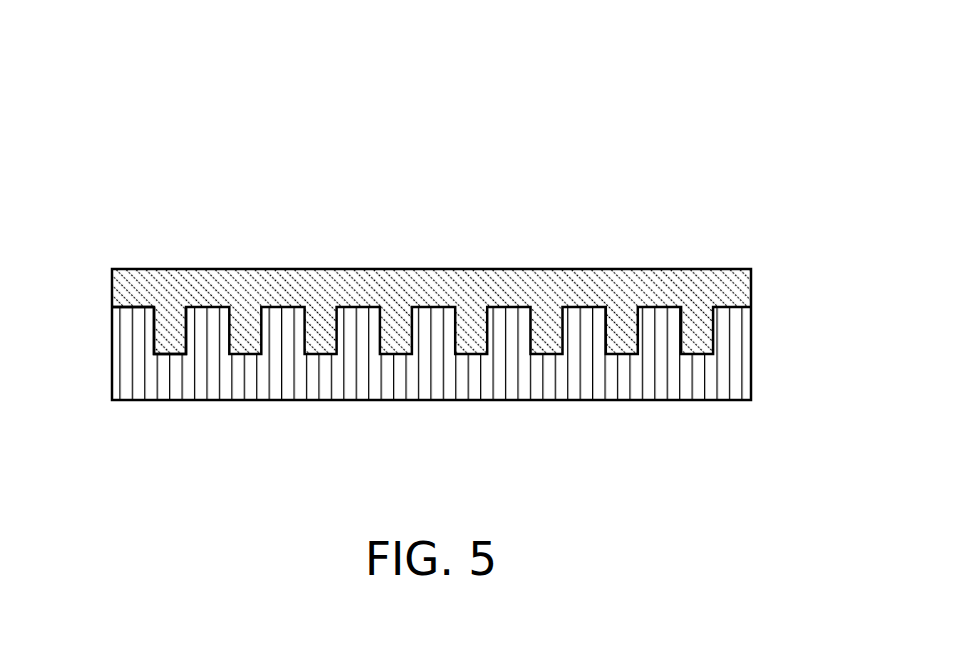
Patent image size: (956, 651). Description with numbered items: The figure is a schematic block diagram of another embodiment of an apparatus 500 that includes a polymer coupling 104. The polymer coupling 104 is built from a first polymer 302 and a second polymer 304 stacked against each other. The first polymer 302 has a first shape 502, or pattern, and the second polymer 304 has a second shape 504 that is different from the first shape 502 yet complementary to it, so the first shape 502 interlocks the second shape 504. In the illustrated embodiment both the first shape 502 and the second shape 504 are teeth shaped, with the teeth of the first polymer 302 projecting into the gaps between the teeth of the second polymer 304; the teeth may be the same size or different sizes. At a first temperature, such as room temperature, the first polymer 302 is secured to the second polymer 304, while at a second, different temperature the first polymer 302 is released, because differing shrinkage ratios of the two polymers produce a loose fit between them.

The apparatus 500 is at (123, 151).
The polymer coupling 104 is at (710, 236).
The first polymer 302 is at (738, 288).
The second polymer 304 is at (123, 380).
The first shape 502 is at (172, 327).
The second shape 504 is at (123, 323).